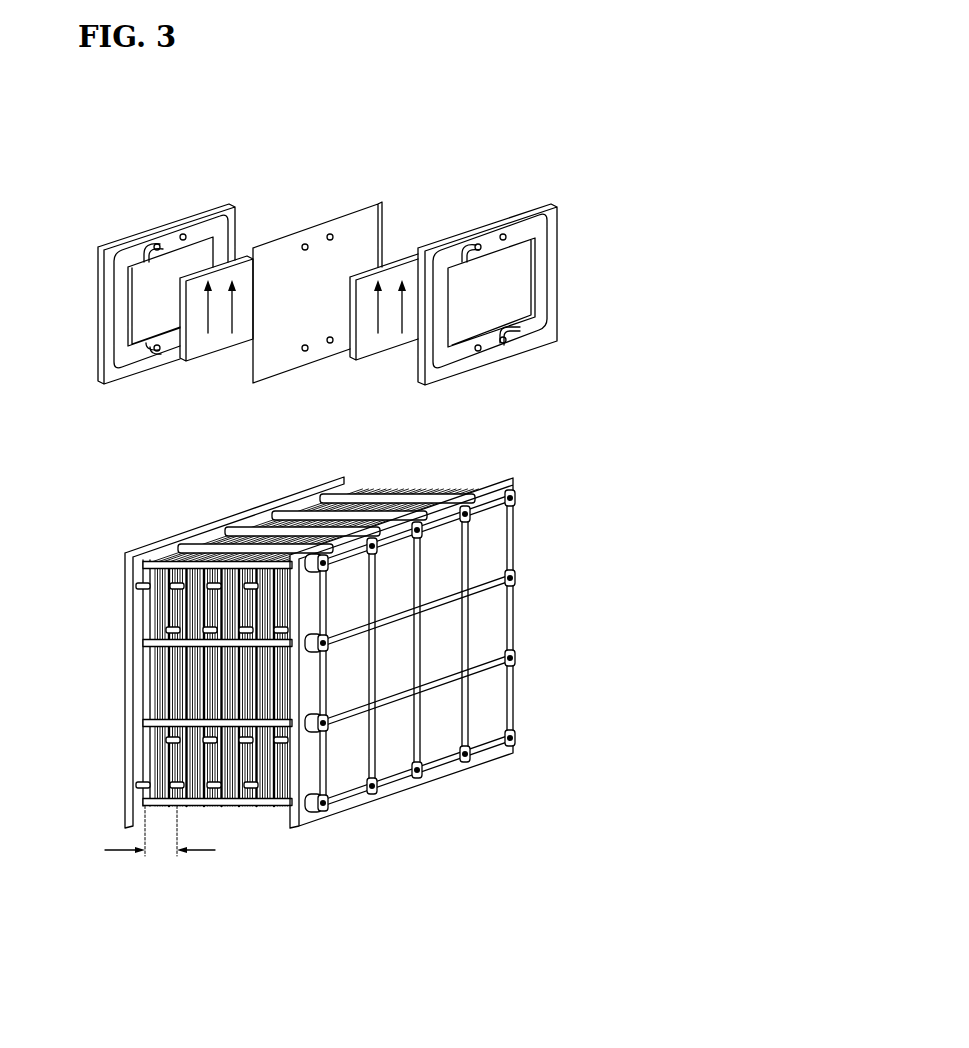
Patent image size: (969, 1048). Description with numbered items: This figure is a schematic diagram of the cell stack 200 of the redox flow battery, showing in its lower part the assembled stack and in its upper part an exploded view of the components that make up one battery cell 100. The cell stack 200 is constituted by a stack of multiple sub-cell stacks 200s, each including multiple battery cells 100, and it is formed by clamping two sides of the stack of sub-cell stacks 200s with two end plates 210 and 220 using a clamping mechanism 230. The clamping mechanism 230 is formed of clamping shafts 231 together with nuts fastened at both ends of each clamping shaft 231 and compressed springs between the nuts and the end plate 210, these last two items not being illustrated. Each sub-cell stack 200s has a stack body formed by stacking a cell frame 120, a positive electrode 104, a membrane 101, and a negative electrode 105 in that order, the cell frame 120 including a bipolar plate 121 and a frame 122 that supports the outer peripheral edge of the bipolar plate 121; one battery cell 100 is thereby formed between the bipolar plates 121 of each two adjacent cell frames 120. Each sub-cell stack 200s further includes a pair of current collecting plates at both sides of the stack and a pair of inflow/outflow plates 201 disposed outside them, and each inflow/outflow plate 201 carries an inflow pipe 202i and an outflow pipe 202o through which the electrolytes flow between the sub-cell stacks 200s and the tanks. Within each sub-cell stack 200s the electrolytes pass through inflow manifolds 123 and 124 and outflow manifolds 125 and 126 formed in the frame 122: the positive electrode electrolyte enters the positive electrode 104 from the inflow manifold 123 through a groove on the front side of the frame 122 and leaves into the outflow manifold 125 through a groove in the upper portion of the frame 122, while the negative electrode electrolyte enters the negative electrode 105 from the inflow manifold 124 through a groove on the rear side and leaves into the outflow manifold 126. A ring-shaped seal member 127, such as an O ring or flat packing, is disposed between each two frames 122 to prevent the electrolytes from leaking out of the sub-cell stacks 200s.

The battery cell 100 is at (449, 294).
The membrane 101 is at (340, 203).
The positive electrode 104 is at (232, 342).
The negative electrode 105 is at (402, 343).
The cell frame 120 is at (406, 294).
The bipolar plate 121 is at (518, 253).
The frame 122 is at (544, 289).
The inflow manifold 123 is at (519, 345).
The inflow manifold 124 is at (157, 352).
The outflow manifold 125 is at (156, 242).
The outflow manifold 126 is at (185, 234).
The ring-shaped seal member 127 is at (237, 222).
The cell stack 200 is at (328, 687).
The sub-cell stack 200s is at (160, 852).
The inflow/outflow plate 201 is at (147, 693).
The outflow pipe 202o is at (147, 630).
The inflow pipe 202i is at (137, 784).
The end plate 210 is at (312, 813).
The end plate 220 is at (123, 566).
The clamping mechanism 230 is at (252, 687).
The clamping shaft 231 is at (190, 560).